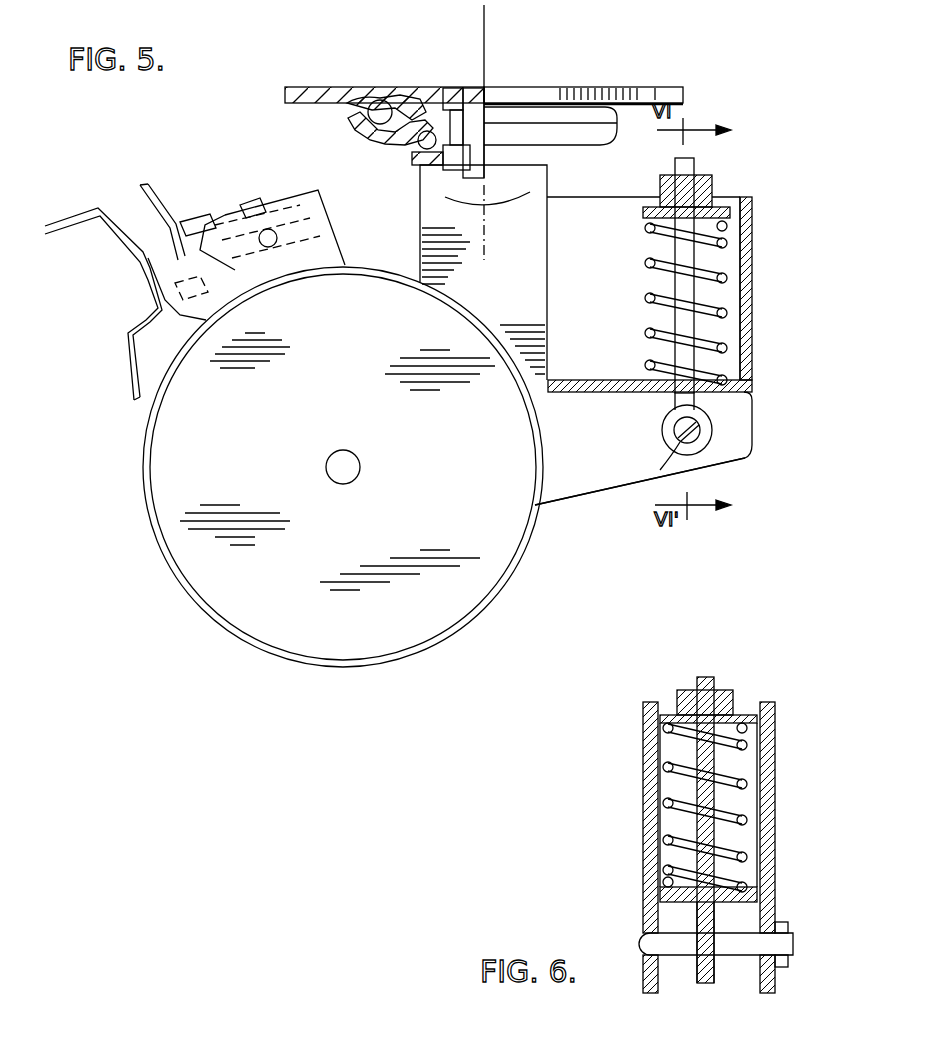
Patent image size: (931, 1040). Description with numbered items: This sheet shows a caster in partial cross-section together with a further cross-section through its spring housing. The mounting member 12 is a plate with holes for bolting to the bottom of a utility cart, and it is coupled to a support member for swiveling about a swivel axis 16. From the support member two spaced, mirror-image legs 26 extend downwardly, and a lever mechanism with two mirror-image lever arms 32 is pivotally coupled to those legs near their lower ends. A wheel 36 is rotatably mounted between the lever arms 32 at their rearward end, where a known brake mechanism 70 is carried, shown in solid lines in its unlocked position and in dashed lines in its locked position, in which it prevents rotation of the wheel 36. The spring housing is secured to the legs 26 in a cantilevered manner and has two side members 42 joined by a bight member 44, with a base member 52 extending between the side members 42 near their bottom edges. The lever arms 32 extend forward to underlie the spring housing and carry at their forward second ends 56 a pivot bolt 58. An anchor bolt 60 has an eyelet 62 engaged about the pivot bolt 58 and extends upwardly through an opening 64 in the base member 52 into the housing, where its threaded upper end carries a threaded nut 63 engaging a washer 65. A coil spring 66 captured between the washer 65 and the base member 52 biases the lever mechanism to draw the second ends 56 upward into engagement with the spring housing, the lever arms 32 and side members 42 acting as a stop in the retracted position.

In FIG. 5, the mounting member 12 is at (548, 88).
In FIG. 5, the swivel axis 16 is at (484, 20).
In FIG. 5, the legs 26 is at (517, 305).
In FIG. 5, the lever arms 32 is at (580, 492).
In FIG. 6, the lever arms 32 is at (645, 985).
In FIG. 5, the wheel 36 is at (195, 575).
In FIG. 5, the side members 42 is at (594, 293).
In FIG. 6, the side members 42 is at (645, 775).
In FIG. 5, the bight member 44 is at (752, 272).
In FIG. 5, the base member 52 is at (578, 392).
In FIG. 6, the base member 52 is at (765, 925).
In FIG. 5, the second ends 56 is at (752, 440).
In FIG. 5, the pivot bolt 58 is at (678, 445).
In FIG. 6, the pivot bolt 58 is at (652, 944).
In FIG. 5, the anchor bolt 60 is at (694, 162).
In FIG. 6, the anchor bolt 60 is at (705, 677).
In FIG. 5, the eyelet 62 is at (705, 432).
In FIG. 5, the threaded nut 63 is at (712, 183).
In FIG. 6, the threaded nut 63 is at (733, 692).
In FIG. 5, the opening 64 is at (672, 398).
In FIG. 6, the opening 64 is at (700, 958).
In FIG. 5, the washer 65 is at (643, 212).
In FIG. 6, the washer 65 is at (668, 716).
In FIG. 5, the coil spring 66 is at (728, 305).
In FIG. 6, the coil spring 66 is at (728, 785).
In FIG. 5, the brake mechanism 70 is at (115, 185).